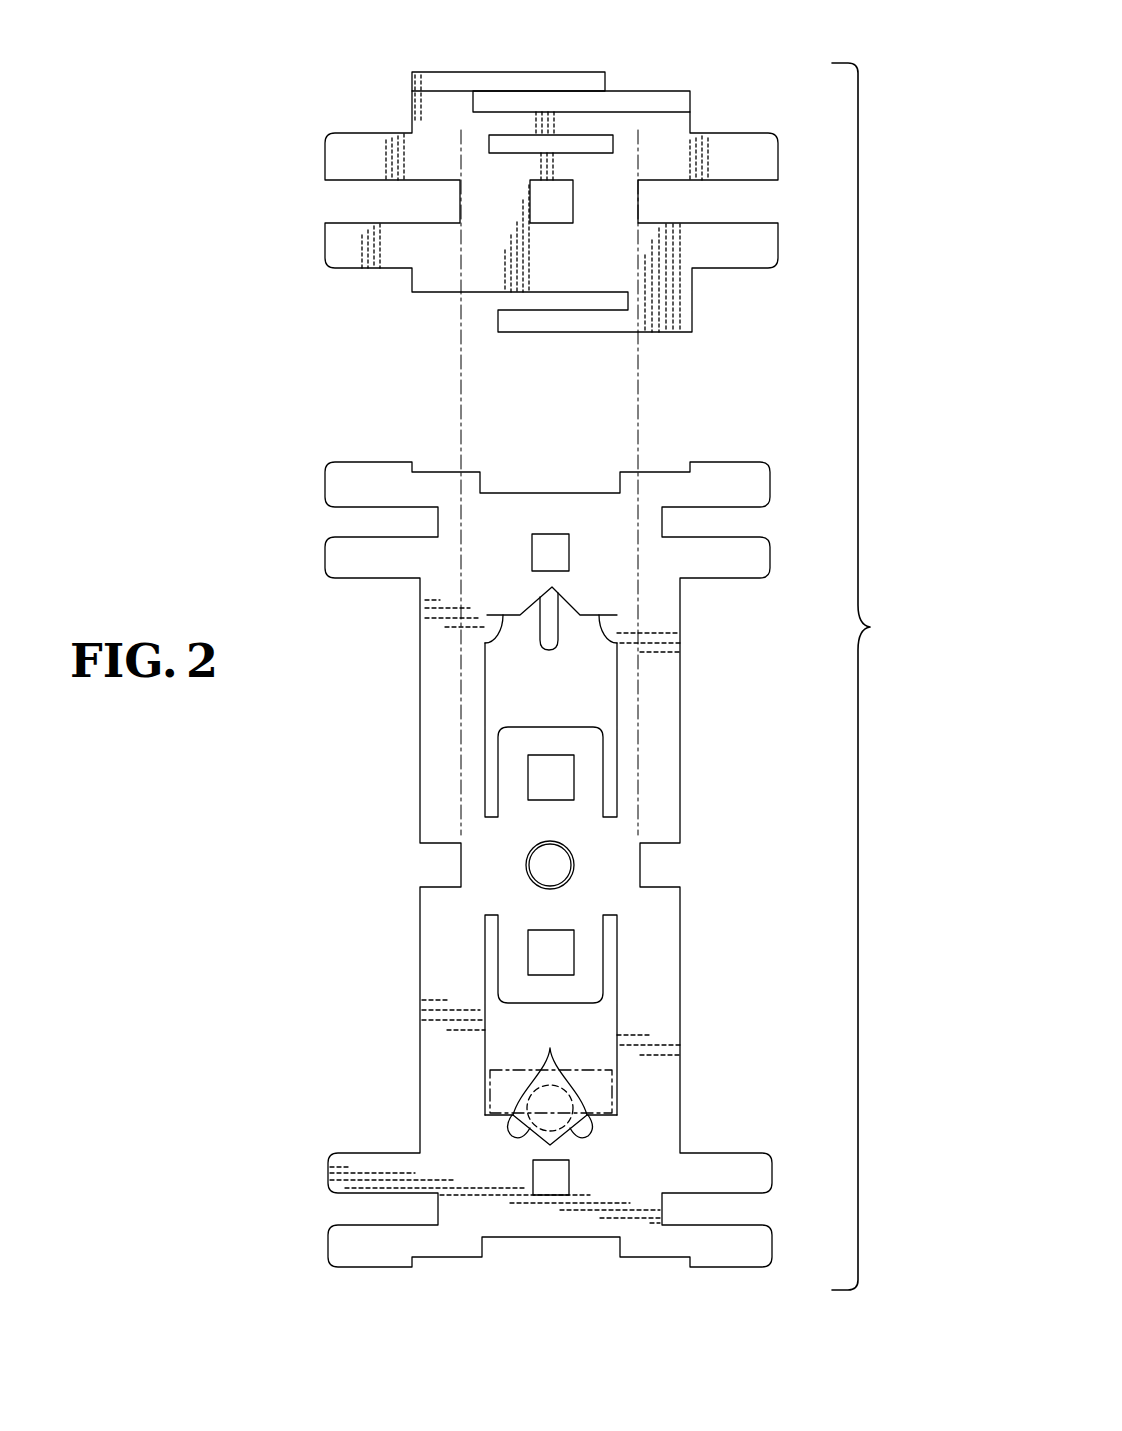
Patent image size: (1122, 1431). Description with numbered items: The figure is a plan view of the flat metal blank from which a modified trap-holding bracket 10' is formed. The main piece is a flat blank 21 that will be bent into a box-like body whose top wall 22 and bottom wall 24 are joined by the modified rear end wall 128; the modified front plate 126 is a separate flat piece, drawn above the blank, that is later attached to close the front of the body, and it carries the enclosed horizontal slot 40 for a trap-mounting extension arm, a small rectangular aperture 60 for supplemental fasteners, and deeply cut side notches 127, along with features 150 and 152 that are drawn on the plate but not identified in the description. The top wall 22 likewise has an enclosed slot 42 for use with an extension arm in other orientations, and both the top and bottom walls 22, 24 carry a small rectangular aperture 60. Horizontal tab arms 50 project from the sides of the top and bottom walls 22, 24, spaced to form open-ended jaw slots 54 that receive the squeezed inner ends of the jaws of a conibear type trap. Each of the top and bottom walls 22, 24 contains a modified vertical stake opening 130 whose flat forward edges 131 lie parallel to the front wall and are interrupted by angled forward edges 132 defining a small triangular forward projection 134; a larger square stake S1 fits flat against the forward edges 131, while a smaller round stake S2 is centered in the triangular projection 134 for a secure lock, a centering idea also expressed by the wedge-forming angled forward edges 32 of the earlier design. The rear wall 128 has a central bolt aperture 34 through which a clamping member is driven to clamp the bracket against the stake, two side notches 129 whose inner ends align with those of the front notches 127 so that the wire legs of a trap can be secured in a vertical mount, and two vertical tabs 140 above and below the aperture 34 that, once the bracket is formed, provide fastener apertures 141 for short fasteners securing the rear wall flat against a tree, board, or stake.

The modified bracket 10' is at (884, 676).
The flat blank 21 is at (412, 980).
The top wall 22 is at (492, 528).
The bottom wall 24 is at (473, 1168).
The angled forward edges 32 is at (549, 1048).
The bolt aperture 34 is at (547, 858).
The enclosed horizontal slot 40 is at (530, 147).
The enclosed slot 42 is at (577, 497).
The horizontal tab arms 50 is at (370, 560).
The jaw slots 54 is at (417, 523).
The small rectangular aperture 60 is at (552, 205).
The modified front plate 126 is at (662, 97).
The side notches 127 is at (358, 190).
The modified rear end wall 128 is at (643, 832).
The side notches 129 is at (438, 852).
The modified vertical stake openings 130 is at (615, 743).
The flat forward edges 131 is at (492, 643).
The angled forward edges 132 is at (557, 605).
The triangular forward projection 134 is at (558, 592).
The vertical tabs 140 is at (537, 732).
The fastener apertures 141 is at (543, 773).
The end plate 150 is at (493, 77).
The bar 152 is at (588, 100).
The larger square stake S1 is at (587, 1062).
The smaller diameter round stake S2 is at (572, 1092).